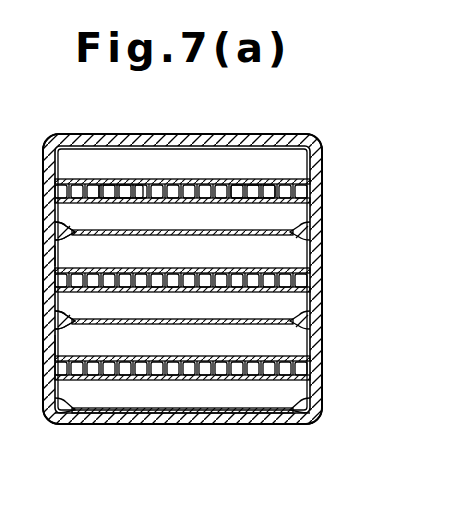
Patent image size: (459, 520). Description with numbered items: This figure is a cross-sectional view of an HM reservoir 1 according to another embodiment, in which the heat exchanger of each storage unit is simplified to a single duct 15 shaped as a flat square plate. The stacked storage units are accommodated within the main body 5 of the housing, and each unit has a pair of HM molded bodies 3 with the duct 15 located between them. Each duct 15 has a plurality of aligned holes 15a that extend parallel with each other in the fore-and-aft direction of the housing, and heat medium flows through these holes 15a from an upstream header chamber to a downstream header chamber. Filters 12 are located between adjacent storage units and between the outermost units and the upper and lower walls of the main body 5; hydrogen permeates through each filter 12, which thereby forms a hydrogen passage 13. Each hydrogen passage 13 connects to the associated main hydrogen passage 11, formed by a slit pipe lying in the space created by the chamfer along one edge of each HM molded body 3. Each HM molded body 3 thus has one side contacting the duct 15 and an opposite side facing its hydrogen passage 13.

The HM reservoir 1 is at (306, 120).
The HM molded body 3 is at (314, 158).
The main body 5 is at (314, 170).
The main hydrogen passage 11 is at (46, 242).
The filter 12 is at (56, 222).
The hydrogen passage 13 is at (157, 231).
The duct 15 is at (311, 191).
The holes 15a is at (264, 185).